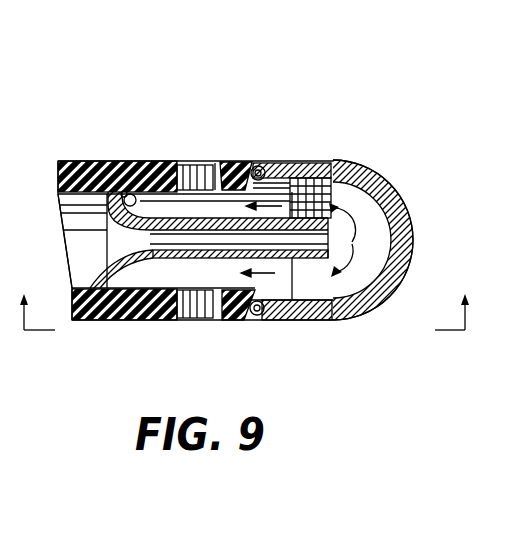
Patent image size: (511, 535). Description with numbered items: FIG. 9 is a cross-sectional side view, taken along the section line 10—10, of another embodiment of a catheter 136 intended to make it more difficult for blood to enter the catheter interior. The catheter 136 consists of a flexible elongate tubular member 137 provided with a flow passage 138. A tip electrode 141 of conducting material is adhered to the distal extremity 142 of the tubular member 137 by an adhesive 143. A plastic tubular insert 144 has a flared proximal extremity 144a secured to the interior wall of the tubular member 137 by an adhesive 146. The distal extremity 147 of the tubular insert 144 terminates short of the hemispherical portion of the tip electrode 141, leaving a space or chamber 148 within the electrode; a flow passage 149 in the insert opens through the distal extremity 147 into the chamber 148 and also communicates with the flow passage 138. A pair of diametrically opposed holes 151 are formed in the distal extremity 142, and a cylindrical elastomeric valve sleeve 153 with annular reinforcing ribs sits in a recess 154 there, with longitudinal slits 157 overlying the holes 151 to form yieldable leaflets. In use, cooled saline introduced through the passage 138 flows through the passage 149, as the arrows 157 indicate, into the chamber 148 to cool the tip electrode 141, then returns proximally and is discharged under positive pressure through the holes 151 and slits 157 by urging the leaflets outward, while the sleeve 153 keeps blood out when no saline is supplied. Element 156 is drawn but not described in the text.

The section line 10- 10 is at (244, 329).
The catheter 136 is at (89, 155).
The flexible elongate tubular member 137 is at (58, 163).
The flow passage 138 is at (83, 278).
The tip electrode 141 is at (387, 187).
The distal extremity 142 is at (250, 318).
The adhesive 143 is at (268, 163).
The tubular insert 144 is at (294, 212).
The flared proximal extremity 144a is at (82, 292).
The adhesive 146 is at (145, 170).
The distal extremity 147 is at (348, 214).
The chamber 148 is at (403, 268).
The flow passage 149 is at (318, 162).
The holes 151 is at (232, 162).
The valve sleeve 153 is at (216, 312).
The recess 154 is at (169, 162).
The upper bearing ball 156 is at (261, 163).
The slits 157 is at (203, 150).